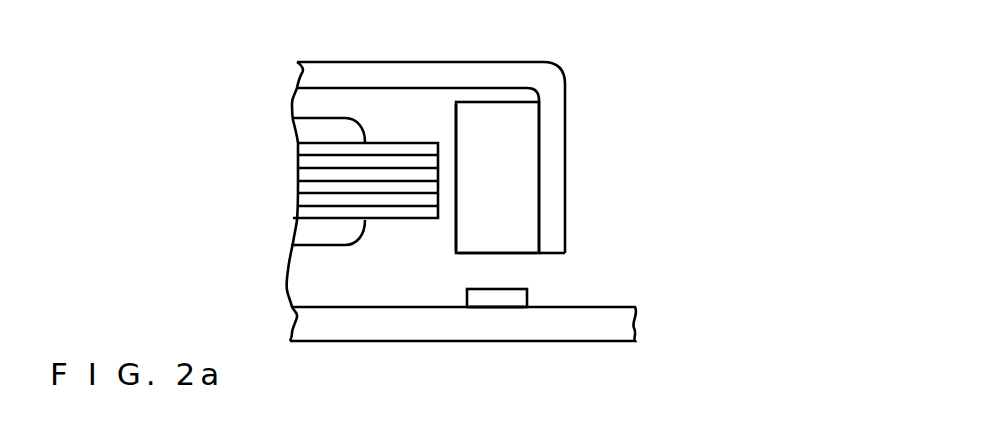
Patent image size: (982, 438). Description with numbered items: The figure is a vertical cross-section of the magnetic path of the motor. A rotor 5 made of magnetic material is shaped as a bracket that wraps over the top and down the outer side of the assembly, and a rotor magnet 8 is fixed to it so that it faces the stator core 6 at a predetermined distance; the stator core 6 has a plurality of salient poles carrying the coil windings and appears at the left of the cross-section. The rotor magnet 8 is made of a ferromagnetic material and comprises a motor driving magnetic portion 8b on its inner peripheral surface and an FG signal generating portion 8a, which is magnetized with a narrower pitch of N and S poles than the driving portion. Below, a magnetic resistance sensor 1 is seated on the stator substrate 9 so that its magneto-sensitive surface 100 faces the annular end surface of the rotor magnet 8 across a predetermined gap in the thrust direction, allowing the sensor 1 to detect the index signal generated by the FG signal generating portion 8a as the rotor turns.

The rotor 5 is at (442, 70).
The rotor magnet 8 is at (518, 190).
The FG signal generating portion 8a is at (473, 253).
The motor driving magnetic portion 8b is at (453, 228).
The stator core 6 is at (323, 193).
The stator substrate 9 is at (577, 330).
The magneto-sensitive surface 100 is at (517, 287).
The magnetic resistance sensor 1 is at (493, 300).